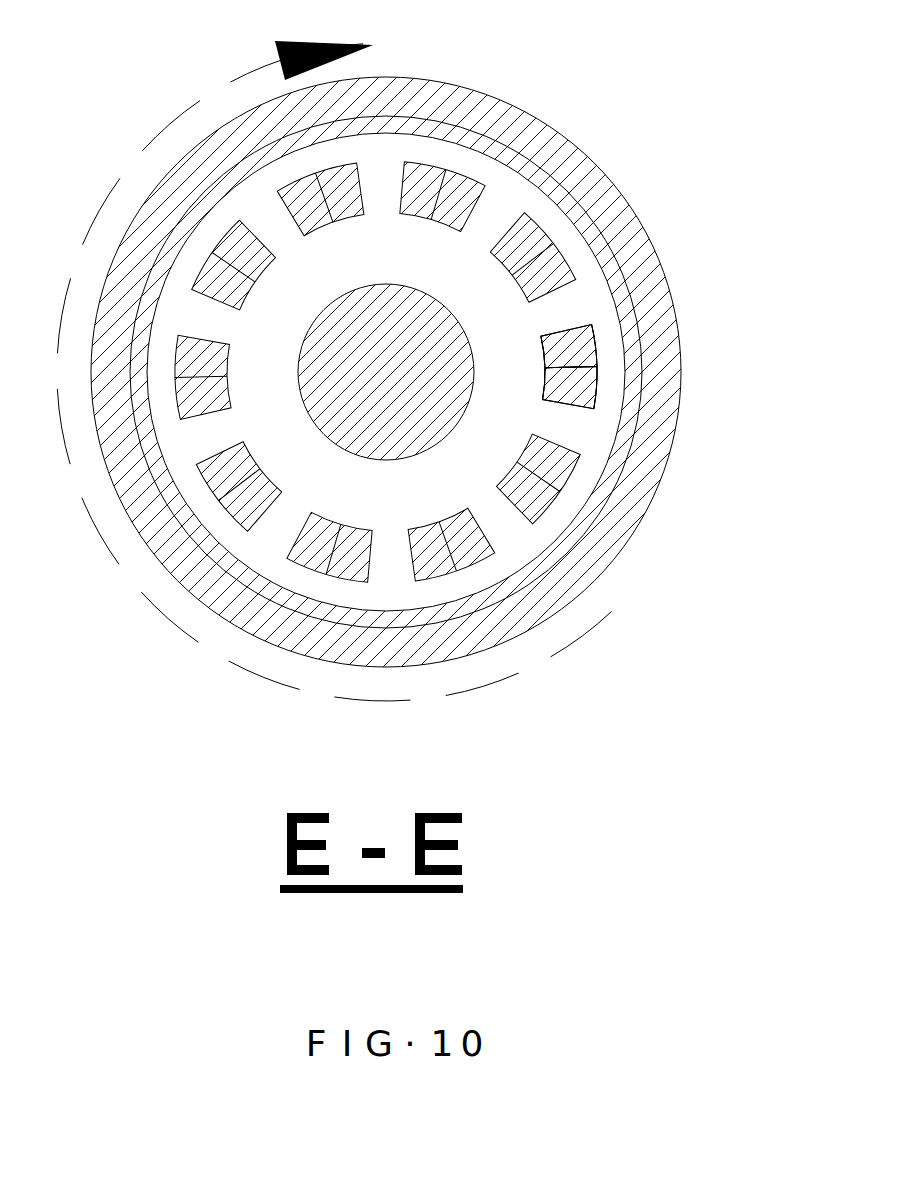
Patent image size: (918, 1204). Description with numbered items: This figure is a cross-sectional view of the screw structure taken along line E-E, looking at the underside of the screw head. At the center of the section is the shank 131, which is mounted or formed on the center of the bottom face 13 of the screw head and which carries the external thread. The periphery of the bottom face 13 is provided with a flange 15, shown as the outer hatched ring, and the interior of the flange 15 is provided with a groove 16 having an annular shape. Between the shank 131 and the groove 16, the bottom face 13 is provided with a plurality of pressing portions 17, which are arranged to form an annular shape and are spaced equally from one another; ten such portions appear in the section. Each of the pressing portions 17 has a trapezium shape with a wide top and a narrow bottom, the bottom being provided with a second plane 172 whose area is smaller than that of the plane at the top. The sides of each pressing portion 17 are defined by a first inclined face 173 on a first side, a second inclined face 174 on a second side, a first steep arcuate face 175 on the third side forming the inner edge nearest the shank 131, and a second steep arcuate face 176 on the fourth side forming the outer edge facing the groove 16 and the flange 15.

The bottom face 13 is at (459, 375).
The shank 131 is at (381, 310).
The flange 15 is at (443, 84).
The groove 16 is at (497, 170).
The pressing portions 17 is at (557, 232).
The second plane 172 is at (648, 335).
The first inclined face 173 is at (597, 393).
The second inclined face 174 is at (598, 287).
The first steep arcuate face 175 is at (545, 369).
The second steep arcuate face 176 is at (598, 372).